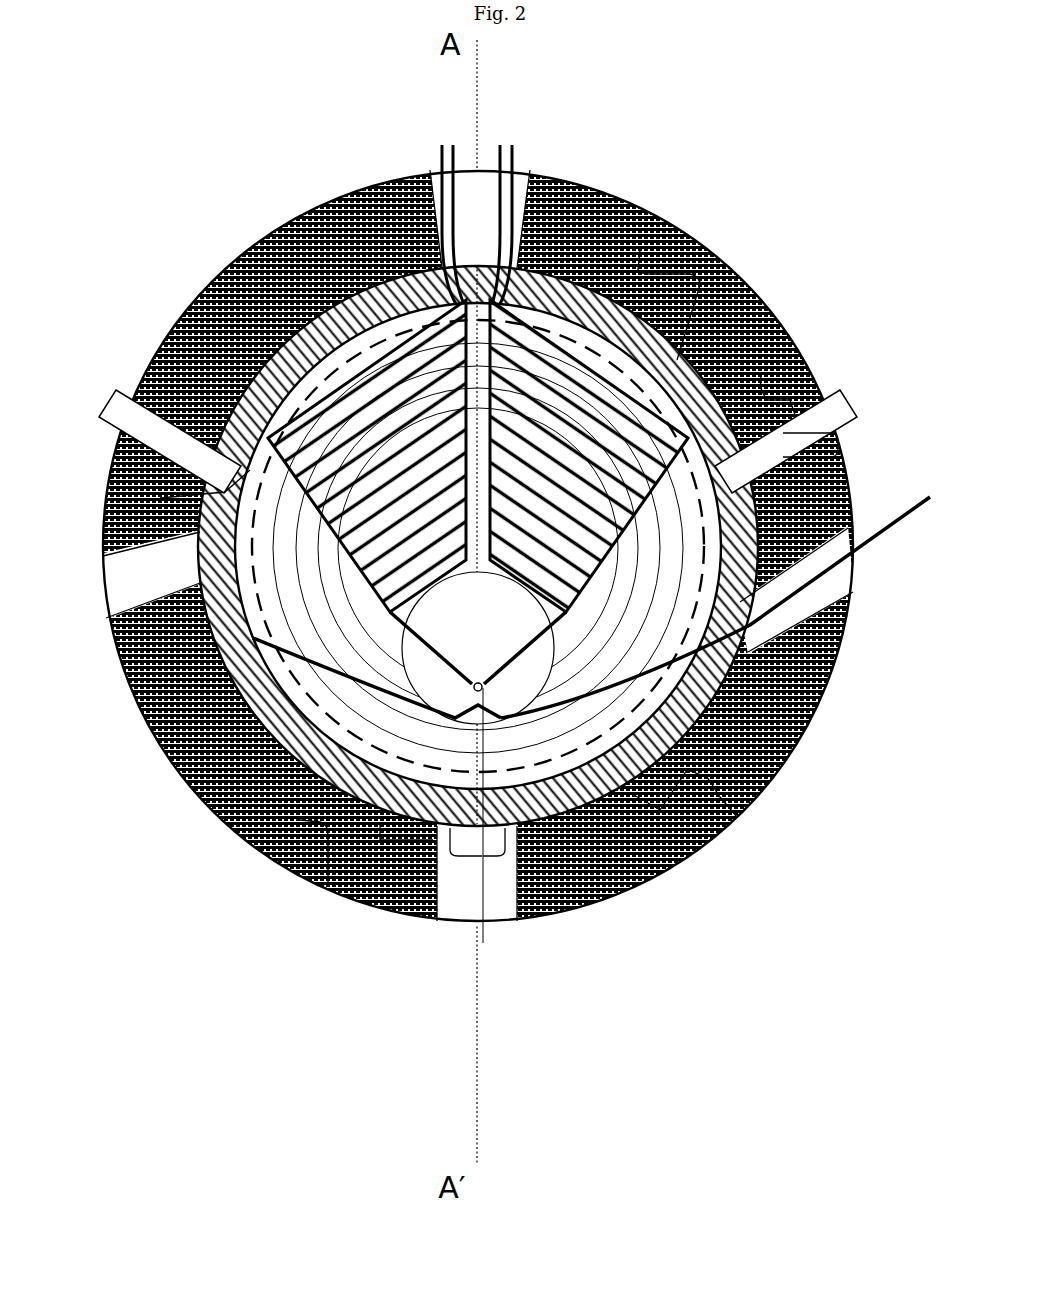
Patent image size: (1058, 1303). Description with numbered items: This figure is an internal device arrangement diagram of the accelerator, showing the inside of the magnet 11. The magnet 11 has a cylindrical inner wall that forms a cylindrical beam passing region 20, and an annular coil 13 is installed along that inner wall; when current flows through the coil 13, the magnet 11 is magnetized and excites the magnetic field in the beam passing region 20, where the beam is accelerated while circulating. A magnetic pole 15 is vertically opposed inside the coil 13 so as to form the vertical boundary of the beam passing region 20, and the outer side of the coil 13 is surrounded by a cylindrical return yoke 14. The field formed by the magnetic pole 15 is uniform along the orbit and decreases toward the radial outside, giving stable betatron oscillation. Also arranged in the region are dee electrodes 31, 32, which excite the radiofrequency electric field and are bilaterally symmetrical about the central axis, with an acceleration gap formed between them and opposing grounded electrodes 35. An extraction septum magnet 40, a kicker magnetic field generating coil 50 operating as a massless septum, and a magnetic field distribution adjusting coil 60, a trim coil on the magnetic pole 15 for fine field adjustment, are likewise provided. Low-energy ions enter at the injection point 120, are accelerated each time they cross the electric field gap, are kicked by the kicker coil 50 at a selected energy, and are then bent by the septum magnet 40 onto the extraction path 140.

The magnet 11 is at (172, 290).
The coil 13 is at (640, 258).
The return yoke 14 is at (170, 738).
The magnetic pole 15 is at (737, 817).
The beam passing region 20 is at (470, 690).
The dee electrode 31 is at (848, 415).
The dee electrode 32 is at (116, 392).
The grounded electrode 35 is at (762, 372).
The extraction septum magnet 40 is at (498, 770).
The kicker magnetic field generating coil 50 is at (478, 336).
The magnetic field distribution adjusting coil 60 is at (328, 887).
The injection point 120 is at (512, 860).
The extraction path 140 is at (913, 530).